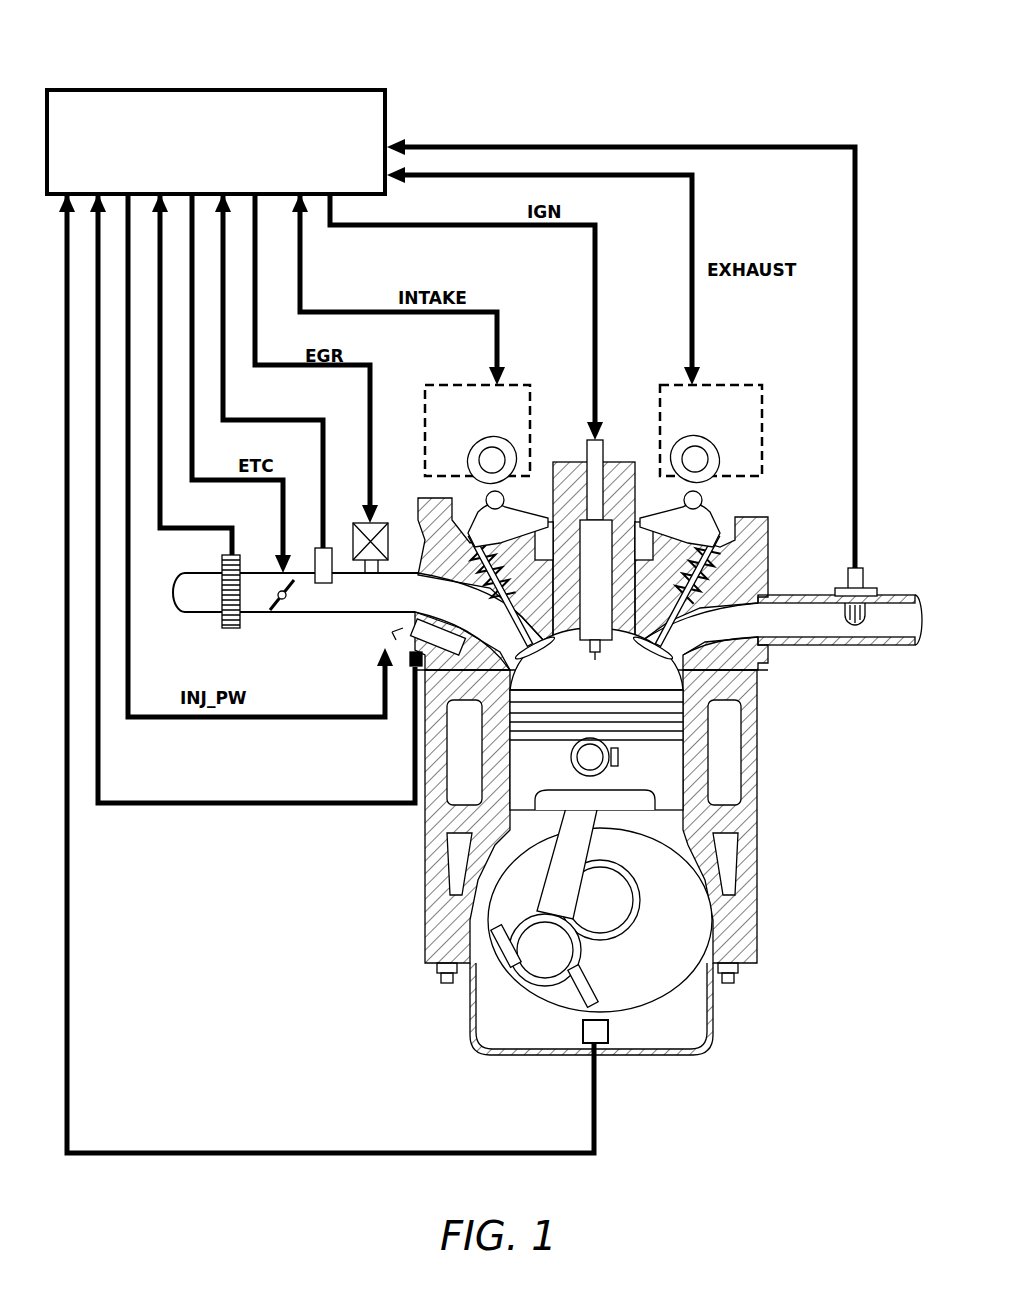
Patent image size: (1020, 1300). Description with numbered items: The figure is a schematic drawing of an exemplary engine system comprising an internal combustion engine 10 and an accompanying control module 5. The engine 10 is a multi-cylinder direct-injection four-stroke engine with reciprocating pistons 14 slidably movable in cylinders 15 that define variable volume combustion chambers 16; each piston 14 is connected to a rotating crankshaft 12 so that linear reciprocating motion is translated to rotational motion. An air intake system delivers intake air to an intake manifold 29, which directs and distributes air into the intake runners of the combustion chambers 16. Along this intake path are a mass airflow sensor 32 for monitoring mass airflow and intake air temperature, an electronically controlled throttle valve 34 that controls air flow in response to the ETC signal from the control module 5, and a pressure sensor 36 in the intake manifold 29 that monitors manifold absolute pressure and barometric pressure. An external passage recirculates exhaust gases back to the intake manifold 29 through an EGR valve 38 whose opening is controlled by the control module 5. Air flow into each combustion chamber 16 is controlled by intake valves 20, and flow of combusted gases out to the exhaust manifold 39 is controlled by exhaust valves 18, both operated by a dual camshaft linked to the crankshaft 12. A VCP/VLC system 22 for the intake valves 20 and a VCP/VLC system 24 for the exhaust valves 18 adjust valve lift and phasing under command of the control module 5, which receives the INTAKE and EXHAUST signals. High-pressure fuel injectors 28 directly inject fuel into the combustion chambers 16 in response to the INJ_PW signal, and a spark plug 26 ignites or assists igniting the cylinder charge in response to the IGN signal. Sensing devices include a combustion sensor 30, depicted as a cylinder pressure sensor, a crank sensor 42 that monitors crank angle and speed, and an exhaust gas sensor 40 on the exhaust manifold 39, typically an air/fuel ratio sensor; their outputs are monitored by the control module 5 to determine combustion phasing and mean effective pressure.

The control module 5 is at (330, 86).
The internal combustion engine 10 is at (762, 820).
The crankshaft 12 is at (655, 982).
The piston 14 is at (657, 770).
The cylinder 15 is at (612, 655).
The combustion chamber 16 is at (565, 673).
The exhaust valve 18 is at (665, 645).
The intake valve 20 is at (512, 622).
The intake VCP/VLC system 22 is at (528, 385).
The exhaust VCP/VLC system 24 is at (755, 452).
The spark plug 26 is at (601, 435).
The fuel injector 28 is at (390, 637).
The intake manifold 29 is at (401, 580).
The combustion sensor 30 is at (410, 668).
The mass airflow sensor 32 is at (232, 628).
The throttle valve 34 is at (282, 608).
The pressure sensor 36 is at (323, 583).
The EGR valve 38 is at (368, 560).
The exhaust manifold 39 is at (795, 593).
The exhaust gas sensor 40 is at (862, 580).
The crank sensor 42 is at (588, 1036).